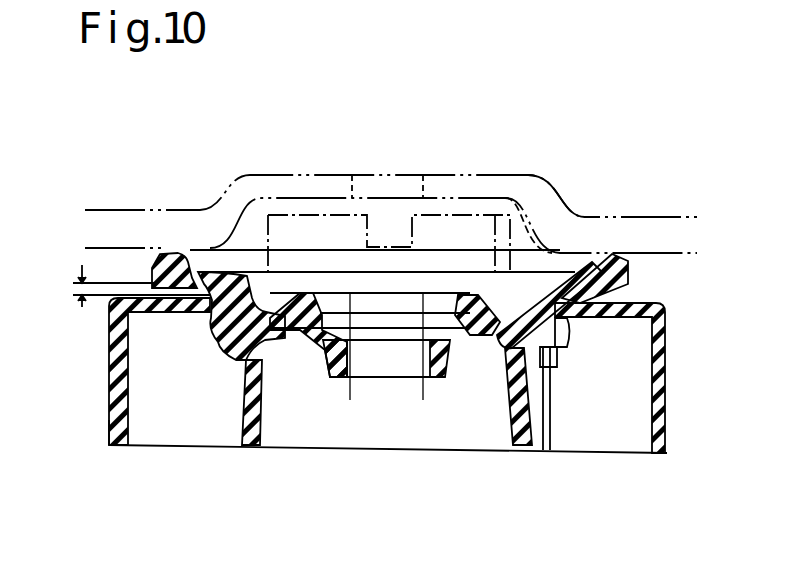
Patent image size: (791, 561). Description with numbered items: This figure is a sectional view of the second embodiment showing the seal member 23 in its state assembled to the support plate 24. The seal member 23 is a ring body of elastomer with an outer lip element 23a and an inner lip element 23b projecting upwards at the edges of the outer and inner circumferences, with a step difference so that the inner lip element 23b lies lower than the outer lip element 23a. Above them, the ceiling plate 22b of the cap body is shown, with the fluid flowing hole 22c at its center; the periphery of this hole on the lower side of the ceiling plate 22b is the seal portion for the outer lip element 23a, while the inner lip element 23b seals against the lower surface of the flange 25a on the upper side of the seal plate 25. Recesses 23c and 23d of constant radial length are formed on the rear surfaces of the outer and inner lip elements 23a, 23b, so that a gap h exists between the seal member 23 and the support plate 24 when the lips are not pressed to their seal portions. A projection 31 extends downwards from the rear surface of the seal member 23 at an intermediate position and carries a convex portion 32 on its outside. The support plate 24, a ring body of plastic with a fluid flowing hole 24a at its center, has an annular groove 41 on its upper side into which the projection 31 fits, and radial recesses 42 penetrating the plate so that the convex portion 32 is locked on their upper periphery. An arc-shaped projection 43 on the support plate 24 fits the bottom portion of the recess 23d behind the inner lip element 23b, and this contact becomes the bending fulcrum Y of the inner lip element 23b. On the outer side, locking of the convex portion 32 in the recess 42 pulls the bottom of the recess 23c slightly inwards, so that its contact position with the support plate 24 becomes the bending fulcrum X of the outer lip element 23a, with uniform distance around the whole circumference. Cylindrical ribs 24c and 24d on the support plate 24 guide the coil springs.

The ceiling plate 22b is at (600, 212).
The fluid flowing hole 22c is at (402, 180).
The seal member 23 is at (238, 275).
The outer lip element 23a is at (606, 258).
The inner lip element 23b is at (460, 298).
The recess 23c is at (190, 285).
The recess 23d is at (470, 340).
The support plate 24 is at (158, 305).
The fluid flowing hole 24a is at (373, 370).
The cylindrical rib 24c is at (247, 420).
The cylindrical rib 24d is at (117, 420).
The seal plate 25 is at (300, 227).
The flange 25a is at (520, 250).
The projection 31 is at (547, 350).
The convex portion 32 is at (567, 323).
The annular groove 41 is at (550, 300).
The recess 42 is at (553, 347).
The arc-shaped projection 43 is at (500, 345).
The bending fulcrum X is at (600, 303).
The bending fulcrum Y is at (456, 285).
The gap h is at (298, 473).